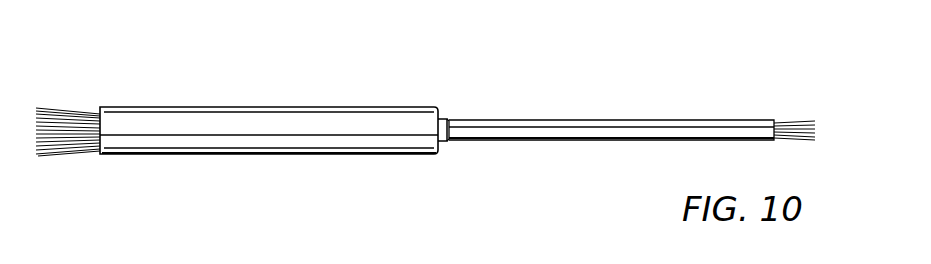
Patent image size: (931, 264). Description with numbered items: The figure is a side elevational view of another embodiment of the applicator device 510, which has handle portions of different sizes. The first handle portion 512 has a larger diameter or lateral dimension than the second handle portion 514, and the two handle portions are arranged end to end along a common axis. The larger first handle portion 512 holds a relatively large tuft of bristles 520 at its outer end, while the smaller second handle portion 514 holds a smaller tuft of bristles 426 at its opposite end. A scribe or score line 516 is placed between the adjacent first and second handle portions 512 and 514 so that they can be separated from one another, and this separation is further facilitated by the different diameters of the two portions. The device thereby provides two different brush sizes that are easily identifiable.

The applicator device 510 is at (473, 89).
The first handle portion 512 is at (289, 154).
The second handle portion 514 is at (610, 135).
The collar 516 is at (443, 140).
The tuft of bristles 520 is at (78, 112).
The tuft of bristles 426 is at (791, 122).